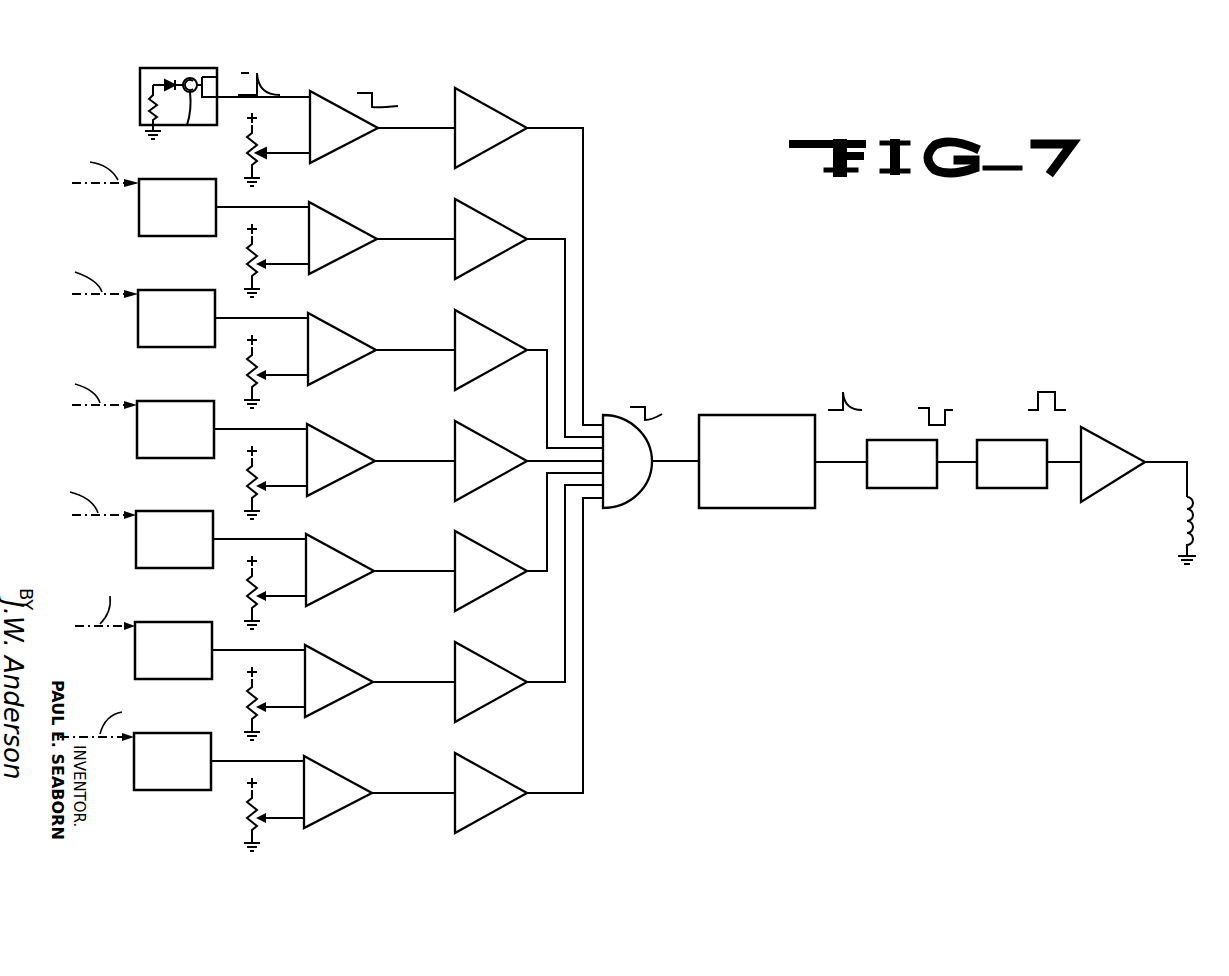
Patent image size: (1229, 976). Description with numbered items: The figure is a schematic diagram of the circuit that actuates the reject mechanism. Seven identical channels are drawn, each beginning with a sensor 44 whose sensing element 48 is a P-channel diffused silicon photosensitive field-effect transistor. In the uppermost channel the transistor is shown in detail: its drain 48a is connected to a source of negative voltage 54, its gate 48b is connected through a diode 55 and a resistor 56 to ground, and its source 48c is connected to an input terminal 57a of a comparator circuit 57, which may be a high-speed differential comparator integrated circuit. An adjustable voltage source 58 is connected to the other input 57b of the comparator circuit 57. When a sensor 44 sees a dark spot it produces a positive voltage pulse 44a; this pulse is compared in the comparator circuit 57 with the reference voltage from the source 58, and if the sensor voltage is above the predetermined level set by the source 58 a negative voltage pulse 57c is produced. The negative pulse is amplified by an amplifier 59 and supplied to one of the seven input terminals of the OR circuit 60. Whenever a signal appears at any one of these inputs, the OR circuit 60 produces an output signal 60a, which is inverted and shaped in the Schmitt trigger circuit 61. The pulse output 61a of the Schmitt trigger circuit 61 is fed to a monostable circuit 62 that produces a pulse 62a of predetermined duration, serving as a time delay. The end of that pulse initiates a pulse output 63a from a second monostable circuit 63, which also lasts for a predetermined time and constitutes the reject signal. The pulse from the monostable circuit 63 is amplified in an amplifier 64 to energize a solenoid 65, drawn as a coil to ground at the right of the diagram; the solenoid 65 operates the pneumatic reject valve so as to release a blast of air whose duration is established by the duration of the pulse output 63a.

The sensor 44 is at (140, 125).
The positive voltage pulse 44a is at (270, 90).
The sensing element 48 is at (190, 78).
The drain 48a is at (204, 78).
The gate 48b is at (177, 80).
The source 48c is at (200, 124).
The source of negative voltage 54 is at (232, 71).
The diode 55 is at (168, 82).
The resistor 56 is at (150, 99).
The comparator circuit 57 is at (345, 147).
The input terminal 57a is at (313, 90).
The input 57b is at (311, 152).
The negative voltage pulse 57c is at (402, 107).
The adjustable voltage source 58 is at (250, 150).
The amplifier 59 is at (500, 114).
The OR circuit 60 is at (615, 508).
The output signal 60a is at (660, 412).
The Schmitt trigger circuit 61 is at (757, 508).
The pulse output 61a is at (840, 404).
The monostable circuit 62 is at (898, 488).
The pulse 62a is at (937, 394).
The monostable circuit 63 is at (1005, 488).
The pulse output 63a is at (1048, 400).
The amplifier 64 is at (1120, 447).
The solenoid 65 is at (1184, 518).